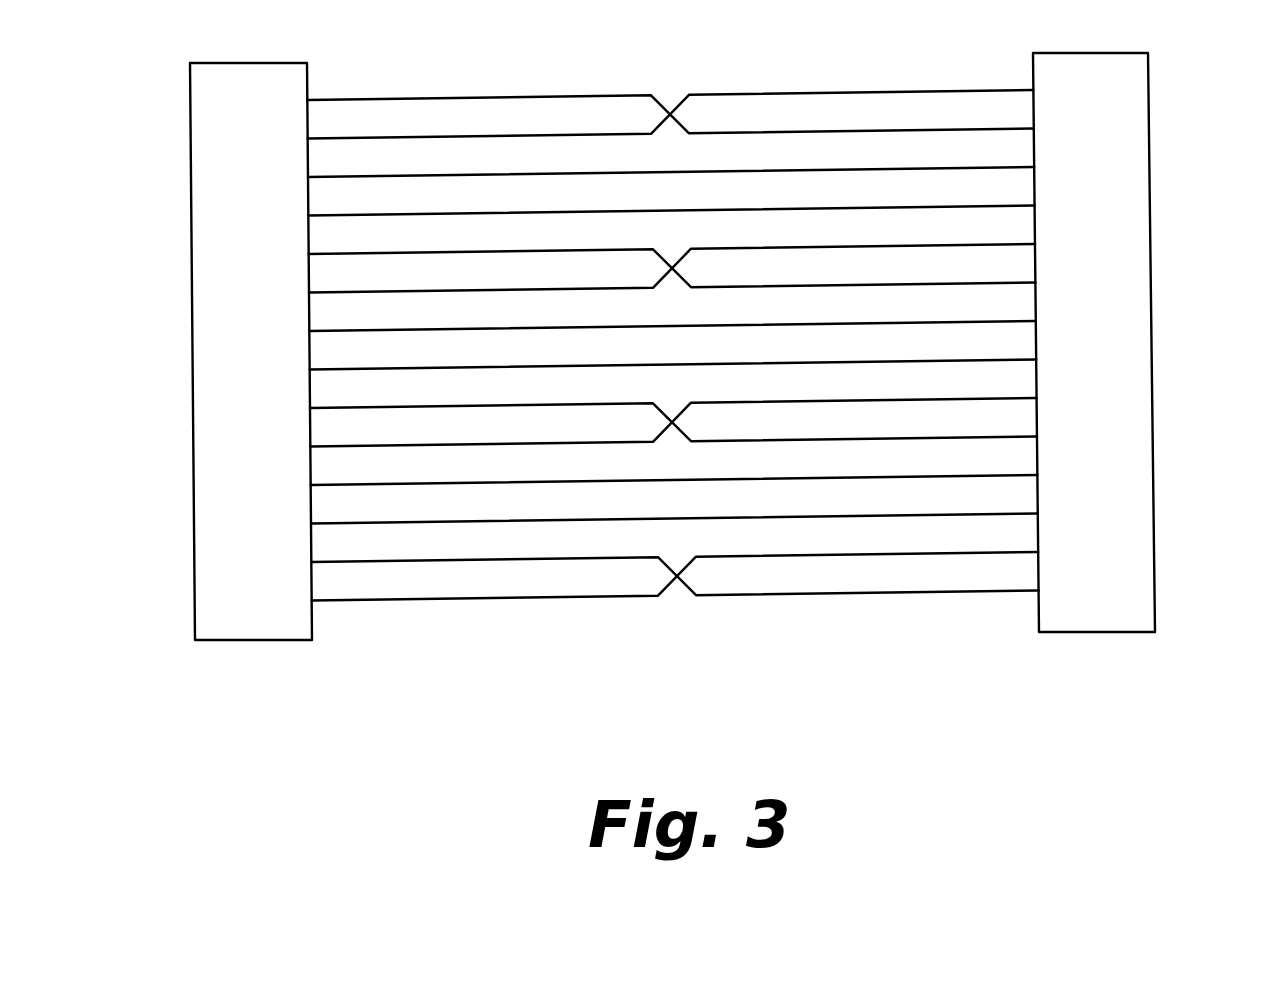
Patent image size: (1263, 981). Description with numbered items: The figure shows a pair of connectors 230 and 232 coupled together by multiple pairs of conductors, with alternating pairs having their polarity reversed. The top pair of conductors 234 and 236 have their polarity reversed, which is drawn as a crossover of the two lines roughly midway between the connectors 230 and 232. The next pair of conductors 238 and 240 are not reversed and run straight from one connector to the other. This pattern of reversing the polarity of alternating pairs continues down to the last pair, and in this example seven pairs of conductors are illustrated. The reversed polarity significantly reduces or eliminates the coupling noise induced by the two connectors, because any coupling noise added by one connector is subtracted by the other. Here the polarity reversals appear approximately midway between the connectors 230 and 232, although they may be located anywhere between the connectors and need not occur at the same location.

The connector 230 is at (190, 100).
The connector 232 is at (1150, 88).
The conductor 234 is at (440, 97).
The conductor 236 is at (440, 135).
The conductor 238 is at (518, 173).
The conductor 240 is at (518, 213).